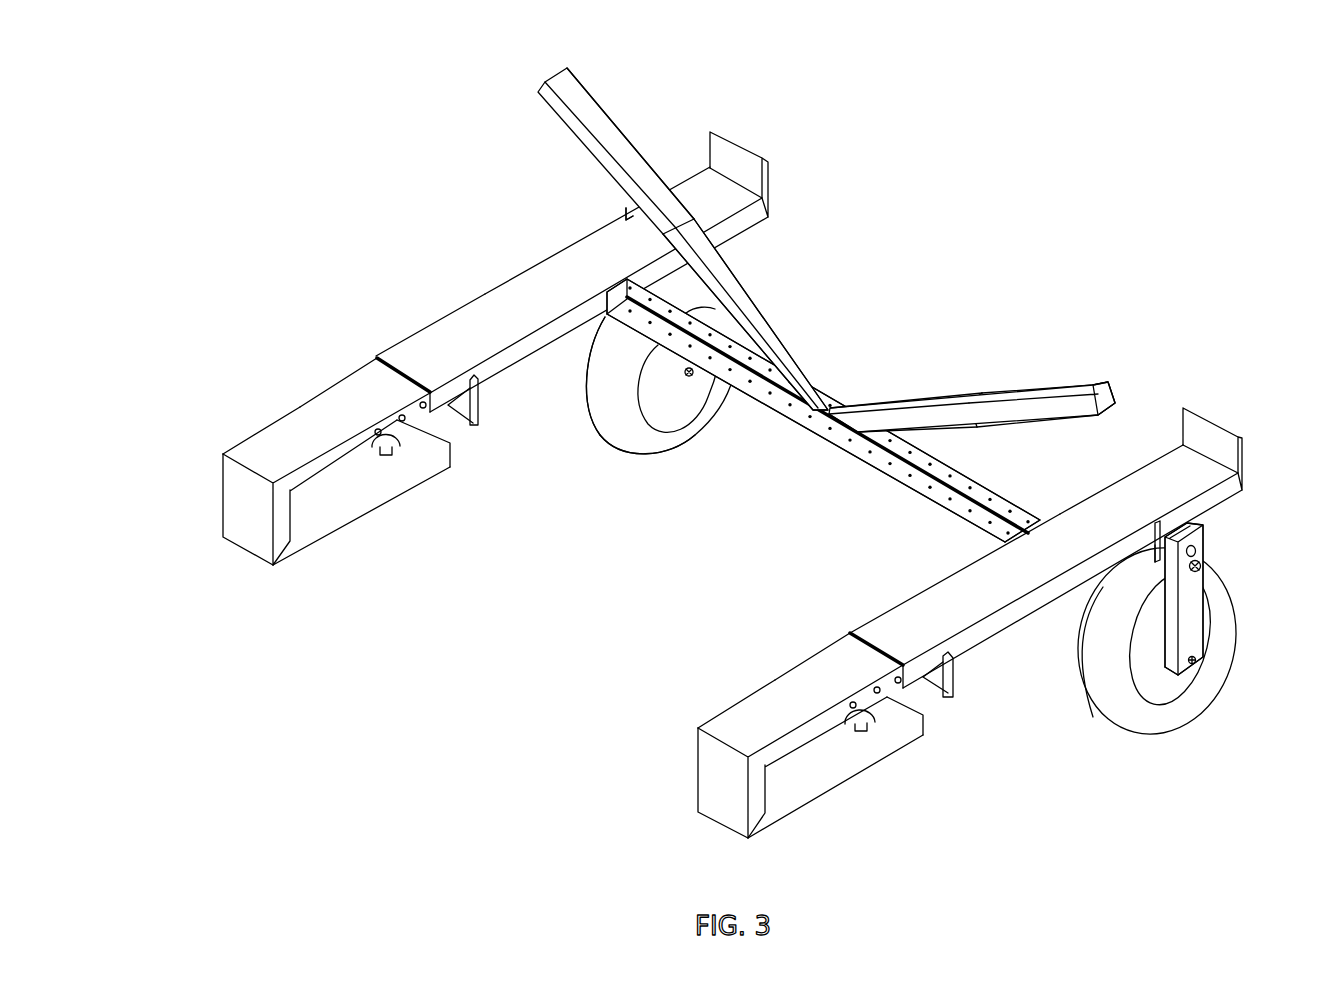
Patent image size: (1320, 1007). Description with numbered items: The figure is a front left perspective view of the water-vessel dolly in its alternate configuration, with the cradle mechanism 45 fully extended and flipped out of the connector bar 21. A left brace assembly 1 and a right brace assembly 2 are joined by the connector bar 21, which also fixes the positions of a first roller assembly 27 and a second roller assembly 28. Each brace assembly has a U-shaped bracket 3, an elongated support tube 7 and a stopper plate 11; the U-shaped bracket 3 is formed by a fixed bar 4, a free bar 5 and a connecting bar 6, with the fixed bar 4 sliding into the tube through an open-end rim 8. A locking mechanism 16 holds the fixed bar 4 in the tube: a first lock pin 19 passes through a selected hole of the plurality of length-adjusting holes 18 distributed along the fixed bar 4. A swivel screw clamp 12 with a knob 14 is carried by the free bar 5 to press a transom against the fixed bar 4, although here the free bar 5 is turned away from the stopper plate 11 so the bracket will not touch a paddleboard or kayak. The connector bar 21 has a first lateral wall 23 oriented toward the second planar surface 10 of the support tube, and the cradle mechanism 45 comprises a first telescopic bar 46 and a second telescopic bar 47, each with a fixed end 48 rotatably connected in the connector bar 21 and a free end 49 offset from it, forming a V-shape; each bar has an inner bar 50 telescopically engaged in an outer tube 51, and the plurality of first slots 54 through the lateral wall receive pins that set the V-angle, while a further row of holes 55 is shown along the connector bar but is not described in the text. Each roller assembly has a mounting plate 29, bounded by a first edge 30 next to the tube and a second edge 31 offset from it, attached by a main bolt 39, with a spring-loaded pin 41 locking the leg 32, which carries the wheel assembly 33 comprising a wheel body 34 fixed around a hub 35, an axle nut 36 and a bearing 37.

The left brace assembly 1 is at (1190, 390).
The right brace assembly 2 is at (733, 118).
The U-shaped bracket 3 is at (257, 410).
The fixed bar 4 is at (247, 440).
The free bar 5 is at (300, 548).
The connecting bar 6 is at (222, 500).
The elongated support tube 7 is at (531, 252).
The open-end rim 8 is at (408, 384).
The second planar surface 10 is at (485, 298).
The stopper plate 11 is at (752, 150).
The swivel screw clamp 12 is at (378, 452).
The knob 14 is at (398, 452).
The locking mechanism 16 is at (467, 470).
The plurality of length-adjusting holes 18 is at (376, 429).
The first lock pin 19 is at (482, 405).
The connector bar 21 is at (798, 447).
The first lateral wall 23 is at (775, 422).
The first roller assembly 27 is at (1224, 558).
The second roller assembly 28 is at (653, 502).
The mounting plate 29 is at (603, 222).
The first edge 30 is at (627, 214).
The second edge 31 is at (1157, 570).
The leg 32 is at (1165, 687).
The wheel assembly 33 is at (620, 470).
The wheel body 34 is at (615, 440).
The hub 35 is at (675, 432).
The axle nut 36 is at (688, 377).
The bearing 37 is at (1200, 664).
The main bolt 39 is at (1186, 556).
The spring-loaded pin 41 is at (1196, 580).
The cradle mechanism 45 is at (912, 378).
The first telescopic bar 46 is at (990, 360).
The second telescopic bar 47 is at (760, 278).
The fixed end 48 is at (836, 394).
The free end 49 is at (551, 68).
The inner bar 50 is at (795, 357).
The outer tube 51 is at (588, 98).
The plurality of first slots 54 is at (862, 452).
The flange holes 55 is at (650, 333).